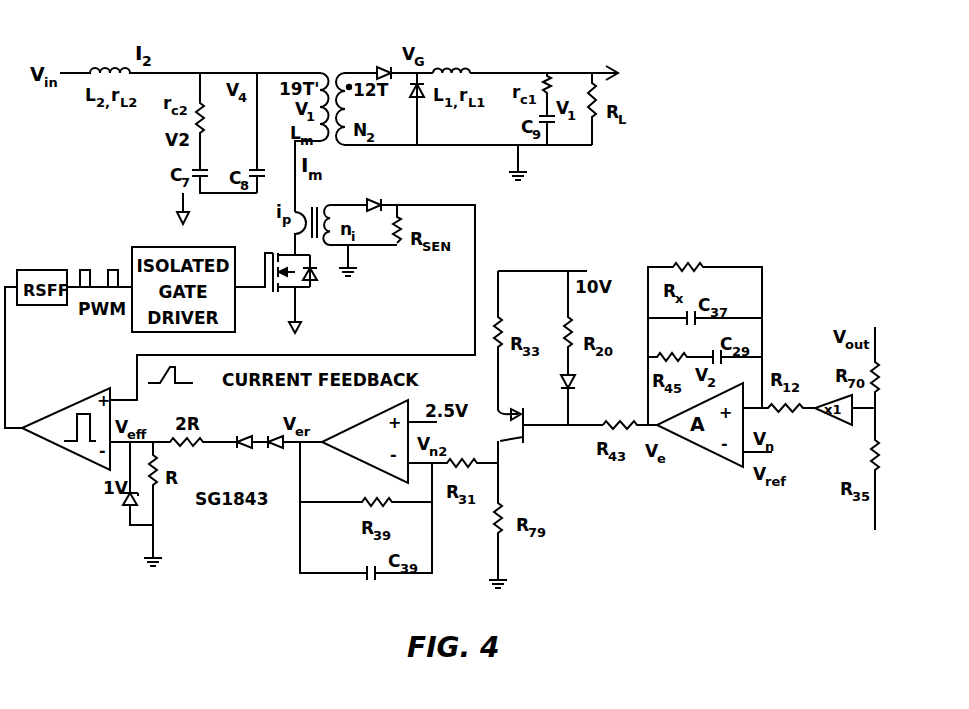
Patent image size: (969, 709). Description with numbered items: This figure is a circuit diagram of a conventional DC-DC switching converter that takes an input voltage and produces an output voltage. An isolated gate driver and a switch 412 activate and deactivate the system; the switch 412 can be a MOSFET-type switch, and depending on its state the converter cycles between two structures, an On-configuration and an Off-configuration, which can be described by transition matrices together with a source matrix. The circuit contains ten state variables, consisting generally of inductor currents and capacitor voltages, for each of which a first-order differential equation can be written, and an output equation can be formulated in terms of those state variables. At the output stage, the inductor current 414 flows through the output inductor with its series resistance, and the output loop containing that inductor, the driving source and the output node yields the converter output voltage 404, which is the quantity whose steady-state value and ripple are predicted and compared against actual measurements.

The converter output voltage 404 is at (658, 66).
The switch 412 is at (245, 249).
The inductor current 414 is at (510, 61).